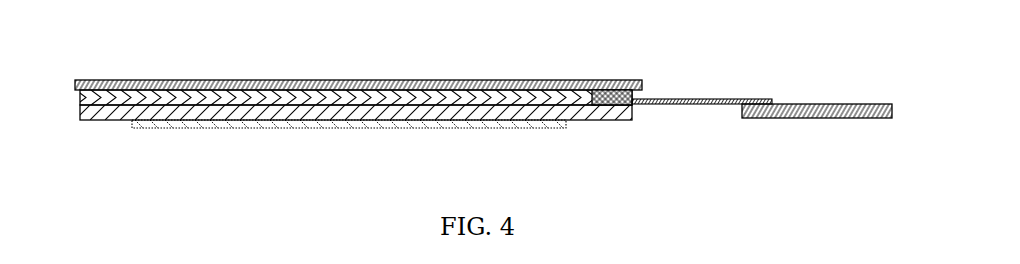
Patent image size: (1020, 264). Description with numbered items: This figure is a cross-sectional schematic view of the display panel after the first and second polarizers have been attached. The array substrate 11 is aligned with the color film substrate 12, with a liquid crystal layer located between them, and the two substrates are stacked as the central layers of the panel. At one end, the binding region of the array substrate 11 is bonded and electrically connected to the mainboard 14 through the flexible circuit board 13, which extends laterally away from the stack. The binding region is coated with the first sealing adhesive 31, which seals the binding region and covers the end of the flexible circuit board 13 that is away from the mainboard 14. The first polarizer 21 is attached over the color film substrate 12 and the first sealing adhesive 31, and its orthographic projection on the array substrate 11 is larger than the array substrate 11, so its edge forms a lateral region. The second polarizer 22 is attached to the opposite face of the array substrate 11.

The array substrate 11 is at (235, 107).
The color film substrate 12 is at (280, 89).
The flexible circuit board 13 is at (721, 102).
The mainboard 14 is at (812, 108).
The first polarizer 21 is at (417, 82).
The second polarizer 22 is at (348, 122).
The first sealing adhesive 31 is at (607, 89).